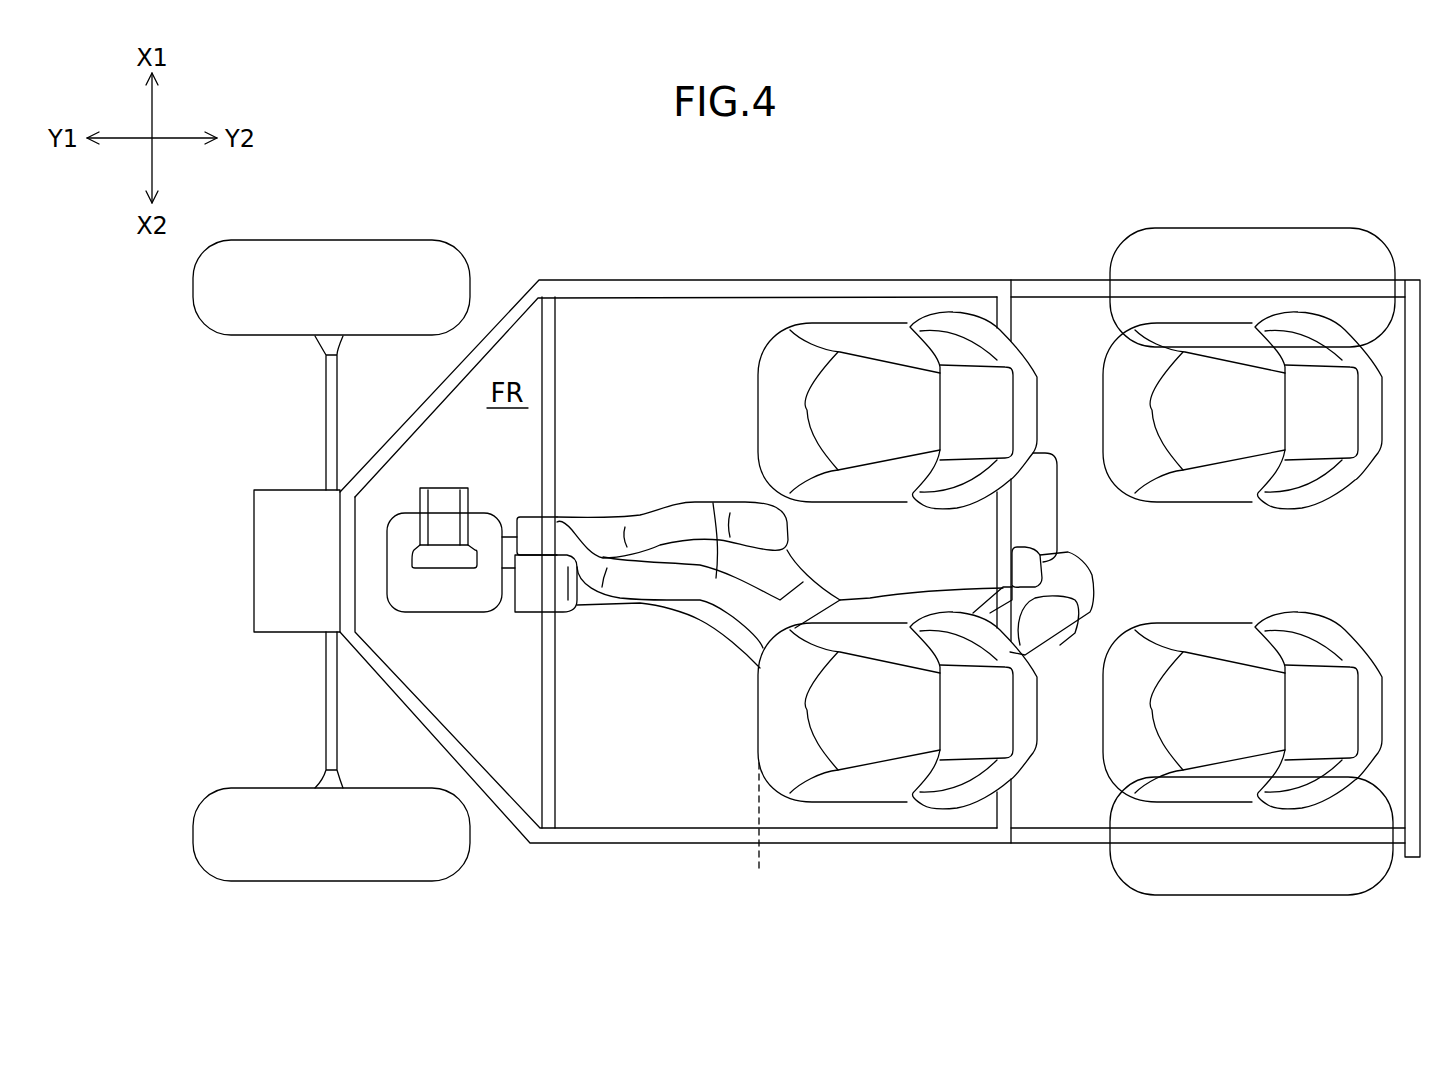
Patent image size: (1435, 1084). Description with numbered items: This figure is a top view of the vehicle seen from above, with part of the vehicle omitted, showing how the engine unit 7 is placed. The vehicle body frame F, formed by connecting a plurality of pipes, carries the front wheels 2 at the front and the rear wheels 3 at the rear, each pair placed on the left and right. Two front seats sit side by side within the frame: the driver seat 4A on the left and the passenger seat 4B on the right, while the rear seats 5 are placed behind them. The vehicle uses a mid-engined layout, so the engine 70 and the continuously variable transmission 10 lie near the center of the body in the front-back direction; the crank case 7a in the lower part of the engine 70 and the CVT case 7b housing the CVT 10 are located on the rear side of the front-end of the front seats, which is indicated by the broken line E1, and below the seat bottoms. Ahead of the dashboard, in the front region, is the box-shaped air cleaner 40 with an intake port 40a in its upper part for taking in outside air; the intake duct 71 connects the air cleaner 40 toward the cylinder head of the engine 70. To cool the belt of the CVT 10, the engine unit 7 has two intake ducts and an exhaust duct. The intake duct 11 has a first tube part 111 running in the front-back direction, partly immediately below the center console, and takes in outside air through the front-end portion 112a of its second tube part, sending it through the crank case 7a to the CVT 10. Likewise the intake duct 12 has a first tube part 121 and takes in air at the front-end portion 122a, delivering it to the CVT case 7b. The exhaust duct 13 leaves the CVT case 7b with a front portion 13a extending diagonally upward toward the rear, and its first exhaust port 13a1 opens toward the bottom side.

The front wheels 2 is at (393, 240).
The rear wheels 3 is at (1290, 228).
The vehicle body frame F is at (627, 280).
The driver seat 4A is at (870, 804).
The passenger seat 4B is at (813, 322).
The rear seats 5 is at (1235, 618).
The engine unit 7 is at (1054, 453).
The engine 70 is at (1058, 507).
The crank case 7a is at (1043, 542).
The CVT case 7b is at (905, 607).
The continuously variable transmission 10 is at (956, 595).
The intake duct 11 is at (680, 538).
The first tube part 111 is at (713, 503).
The front-end portion 112a is at (553, 518).
The intake duct 12 is at (703, 638).
The first tube part 121 is at (668, 602).
The front-end portion 122a is at (560, 600).
The exhaust duct 13 is at (1032, 640).
The front portion 13a is at (1062, 600).
The first exhaust port 13a1 is at (1093, 565).
The air cleaner 40 is at (468, 613).
The intake port 40a is at (448, 488).
The intake duct 71 is at (640, 515).
The front-end of the front seat E1 is at (760, 832).